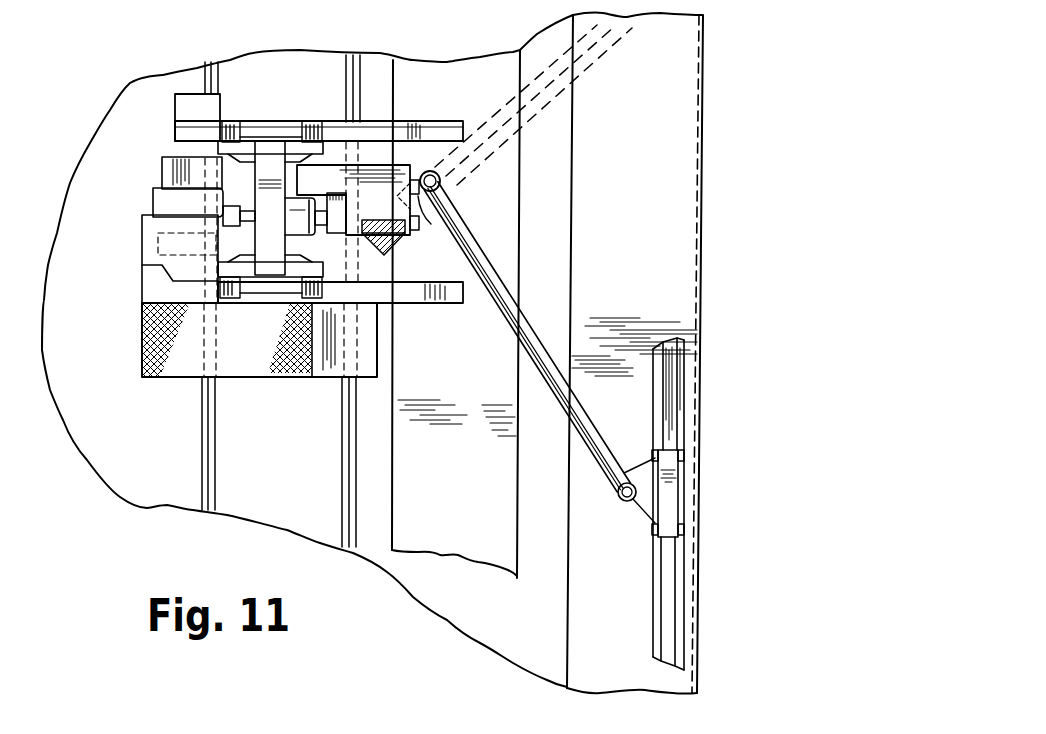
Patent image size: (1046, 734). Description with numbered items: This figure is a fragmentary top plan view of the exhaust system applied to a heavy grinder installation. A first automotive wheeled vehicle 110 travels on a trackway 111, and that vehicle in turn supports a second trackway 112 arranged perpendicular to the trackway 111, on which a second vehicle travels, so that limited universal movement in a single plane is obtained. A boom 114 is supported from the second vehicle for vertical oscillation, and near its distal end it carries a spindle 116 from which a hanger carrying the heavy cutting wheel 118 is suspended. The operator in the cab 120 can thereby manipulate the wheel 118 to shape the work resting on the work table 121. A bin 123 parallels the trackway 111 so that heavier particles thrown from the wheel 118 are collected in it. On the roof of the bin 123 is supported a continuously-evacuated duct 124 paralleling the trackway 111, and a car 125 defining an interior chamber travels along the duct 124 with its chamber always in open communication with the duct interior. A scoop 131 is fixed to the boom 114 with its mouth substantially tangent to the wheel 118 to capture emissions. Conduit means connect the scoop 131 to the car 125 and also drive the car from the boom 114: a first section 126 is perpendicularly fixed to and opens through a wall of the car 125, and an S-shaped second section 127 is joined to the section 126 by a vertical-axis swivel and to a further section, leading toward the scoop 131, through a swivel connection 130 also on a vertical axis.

The first automotive wheeled vehicle 110 is at (136, 249).
The rails or trackway 111 is at (350, 423).
The rails or trackway 112 is at (413, 124).
The boom 114 is at (322, 253).
The spindle 116 is at (378, 220).
The cutting wheel 118 is at (386, 250).
The cab 120 is at (365, 348).
The work table 121 is at (468, 522).
The bin 123 is at (703, 127).
The continuously-evacuated duct 124 is at (650, 612).
The car 125 is at (667, 498).
The first section 126 is at (640, 513).
The second section 127 is at (597, 428).
The swivel connection 130 is at (441, 180).
The scoop 131 is at (425, 218).